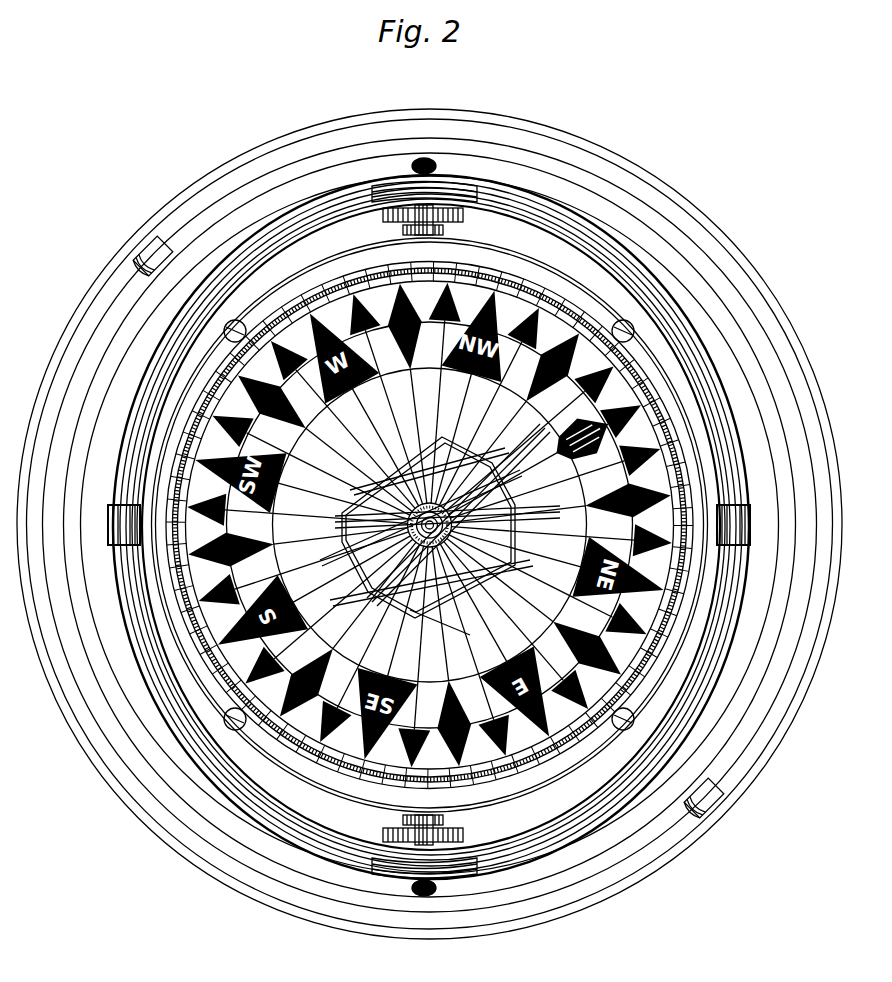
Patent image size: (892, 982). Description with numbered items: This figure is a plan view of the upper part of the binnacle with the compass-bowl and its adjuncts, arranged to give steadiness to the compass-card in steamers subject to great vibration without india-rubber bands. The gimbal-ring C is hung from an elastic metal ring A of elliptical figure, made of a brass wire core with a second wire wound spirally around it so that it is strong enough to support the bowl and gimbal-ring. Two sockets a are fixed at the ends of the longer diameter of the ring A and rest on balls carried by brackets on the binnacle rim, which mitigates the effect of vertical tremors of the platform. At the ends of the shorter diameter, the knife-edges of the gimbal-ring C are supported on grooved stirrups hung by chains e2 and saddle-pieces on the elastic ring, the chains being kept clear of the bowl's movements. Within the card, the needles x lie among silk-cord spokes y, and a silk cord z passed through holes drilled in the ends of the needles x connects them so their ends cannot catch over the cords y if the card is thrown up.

The elastic metal ring A is at (142, 408).
The gimbal-ring C is at (430, 525).
The socket a is at (424, 527).
The chain e2 is at (758, 520).
The needle x is at (447, 521).
The spoke y is at (423, 527).
The cord z is at (421, 548).